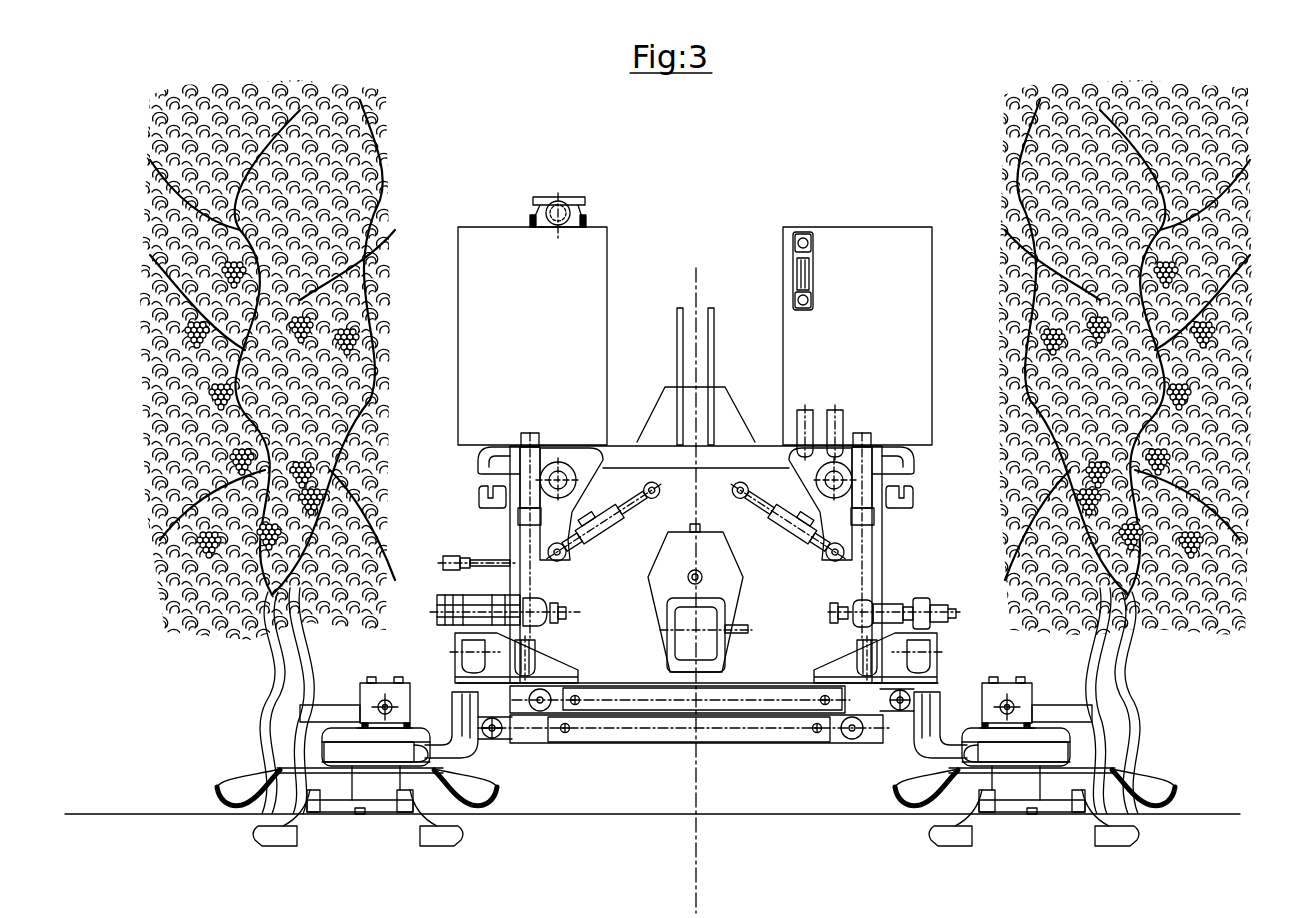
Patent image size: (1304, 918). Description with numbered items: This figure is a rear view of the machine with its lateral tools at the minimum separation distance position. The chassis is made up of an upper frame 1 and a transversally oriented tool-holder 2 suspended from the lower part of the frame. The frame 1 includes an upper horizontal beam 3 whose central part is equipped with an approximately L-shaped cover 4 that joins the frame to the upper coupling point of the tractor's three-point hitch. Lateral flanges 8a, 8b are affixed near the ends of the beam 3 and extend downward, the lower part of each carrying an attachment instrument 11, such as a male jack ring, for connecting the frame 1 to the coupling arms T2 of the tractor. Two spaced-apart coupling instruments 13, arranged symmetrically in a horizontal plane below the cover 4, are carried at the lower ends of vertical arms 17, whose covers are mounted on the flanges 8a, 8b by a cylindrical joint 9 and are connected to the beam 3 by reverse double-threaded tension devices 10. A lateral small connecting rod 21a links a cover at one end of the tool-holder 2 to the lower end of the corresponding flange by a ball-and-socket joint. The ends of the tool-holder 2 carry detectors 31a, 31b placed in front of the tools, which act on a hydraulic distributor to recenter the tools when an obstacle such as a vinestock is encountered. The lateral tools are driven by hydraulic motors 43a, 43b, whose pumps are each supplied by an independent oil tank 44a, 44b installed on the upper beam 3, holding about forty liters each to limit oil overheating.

The upper frame 1 is at (740, 384).
The tool-holder 2 is at (657, 762).
The upper horizontal beam 3 is at (627, 453).
The cover 4 is at (678, 352).
The lateral flange 8a is at (877, 530).
The lateral flange 8b is at (517, 518).
The cylindrical joint 9 is at (540, 473).
The reverse double-threaded tension device 10 is at (603, 531).
The attachment instrument 11 is at (557, 608).
The coupling instrument 13 is at (527, 657).
The vertical arm 17 is at (527, 548).
The lateral small connecting rod 21a is at (450, 628).
The detector 31a is at (1060, 717).
The detector 31b is at (333, 717).
The hydraulic motor 43a is at (1023, 693).
The hydraulic motor 43b is at (373, 692).
The oil tank 44a is at (857, 336).
The oil tank 44b is at (532, 319).
The coupling arms T2 is at (528, 605).